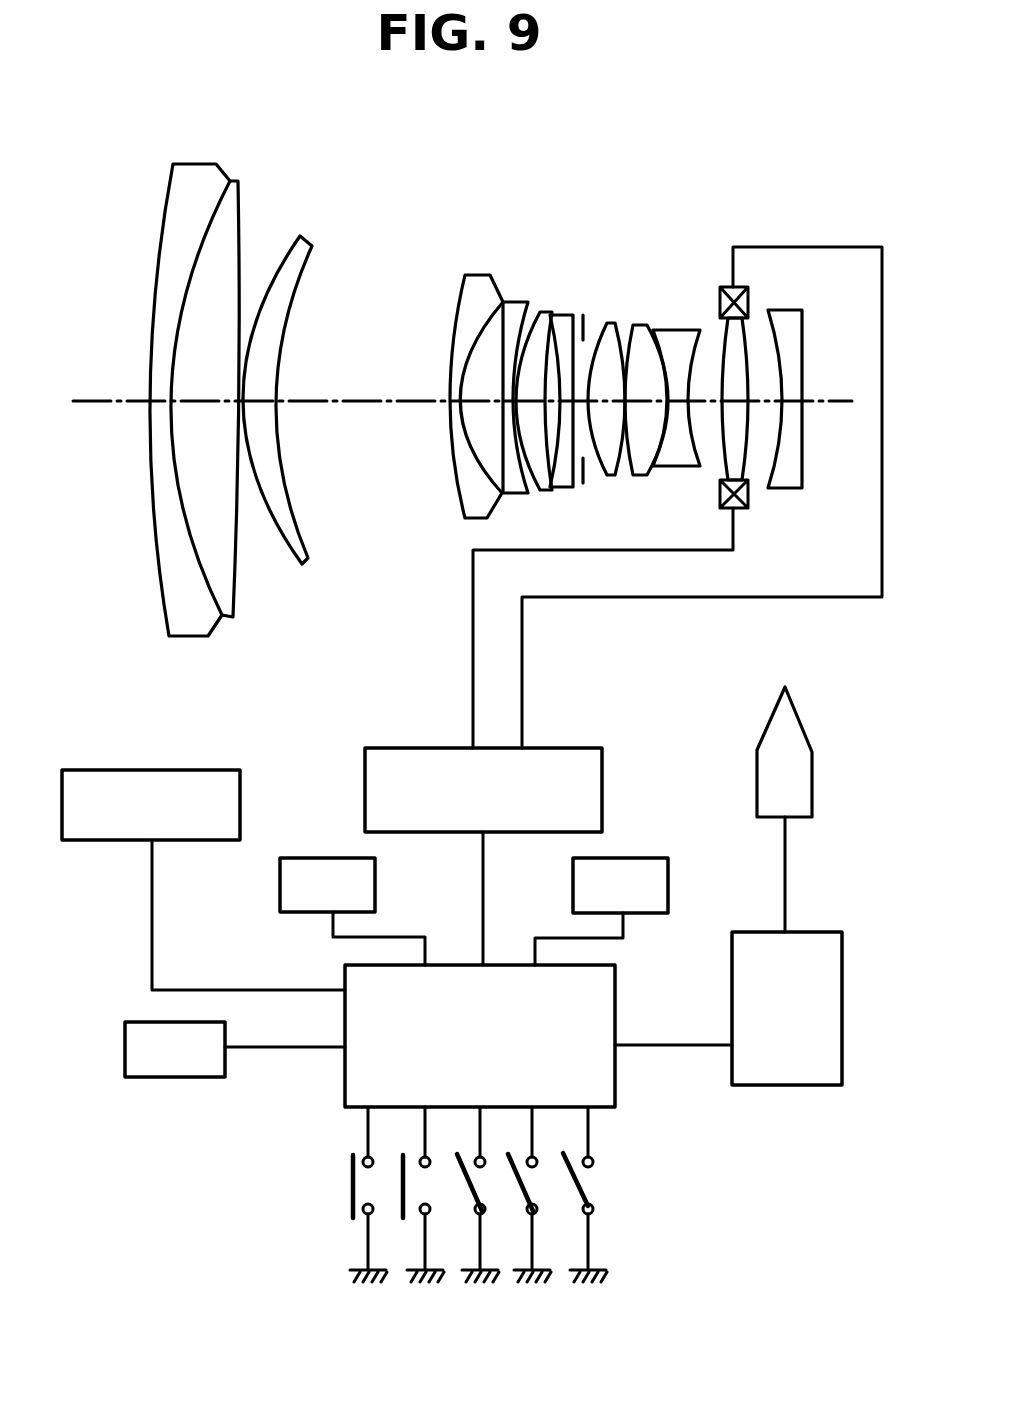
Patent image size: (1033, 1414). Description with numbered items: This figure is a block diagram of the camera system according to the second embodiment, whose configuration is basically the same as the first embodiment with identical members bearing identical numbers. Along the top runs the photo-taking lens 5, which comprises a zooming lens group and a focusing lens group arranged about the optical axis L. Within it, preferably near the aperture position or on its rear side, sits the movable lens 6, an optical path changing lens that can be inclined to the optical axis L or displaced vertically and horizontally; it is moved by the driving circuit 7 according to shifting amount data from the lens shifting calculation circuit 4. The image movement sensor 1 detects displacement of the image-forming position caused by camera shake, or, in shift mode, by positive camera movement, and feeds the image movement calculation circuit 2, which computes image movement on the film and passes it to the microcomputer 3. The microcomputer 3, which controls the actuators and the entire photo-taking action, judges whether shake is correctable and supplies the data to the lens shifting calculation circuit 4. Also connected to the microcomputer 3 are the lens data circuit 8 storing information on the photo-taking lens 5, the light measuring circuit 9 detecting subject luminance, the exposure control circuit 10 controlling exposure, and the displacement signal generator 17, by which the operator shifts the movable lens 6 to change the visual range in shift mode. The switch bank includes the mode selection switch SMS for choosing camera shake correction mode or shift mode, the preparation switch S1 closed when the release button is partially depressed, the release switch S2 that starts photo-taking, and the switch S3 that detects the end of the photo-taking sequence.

The image movement sensor 1 is at (757, 748).
The image movement calculation circuit 2 is at (806, 932).
The microcomputer 3 is at (345, 1093).
The lens shifting calculation circuit 4 is at (420, 748).
The photo-taking lens 5 is at (865, 182).
The movable lens 6 is at (722, 443).
The driving circuit 7 is at (720, 300).
The lens data circuit 8 is at (172, 768).
The light measuring circuit 9 is at (623, 858).
The exposure control circuit 10 is at (335, 858).
The displacement signal generator 17 is at (188, 1078).
The optical axis L is at (132, 403).
The mode selection switch SMS is at (351, 1185).
The preparation switch S1 is at (468, 1190).
The release switch S2 is at (522, 1190).
The switch detecting end of photo-taking sequence S3 is at (585, 1188).